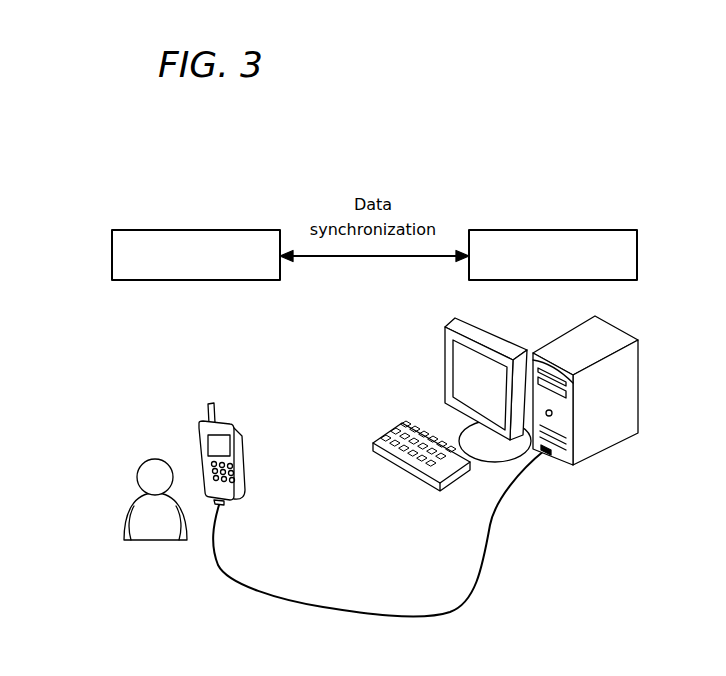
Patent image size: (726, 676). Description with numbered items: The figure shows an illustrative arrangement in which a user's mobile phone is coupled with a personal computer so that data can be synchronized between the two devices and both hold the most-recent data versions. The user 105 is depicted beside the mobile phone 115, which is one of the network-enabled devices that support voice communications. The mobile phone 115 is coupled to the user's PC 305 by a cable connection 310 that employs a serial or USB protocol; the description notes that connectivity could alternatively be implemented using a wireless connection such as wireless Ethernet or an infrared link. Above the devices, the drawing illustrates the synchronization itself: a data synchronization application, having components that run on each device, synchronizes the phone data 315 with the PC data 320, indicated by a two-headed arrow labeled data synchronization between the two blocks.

The user 105 is at (139, 470).
The mobile phone 115 is at (253, 450).
The PC 305 is at (638, 368).
The cable connection 310 is at (478, 587).
The phone data 315 is at (196, 229).
The PC data 320 is at (553, 229).